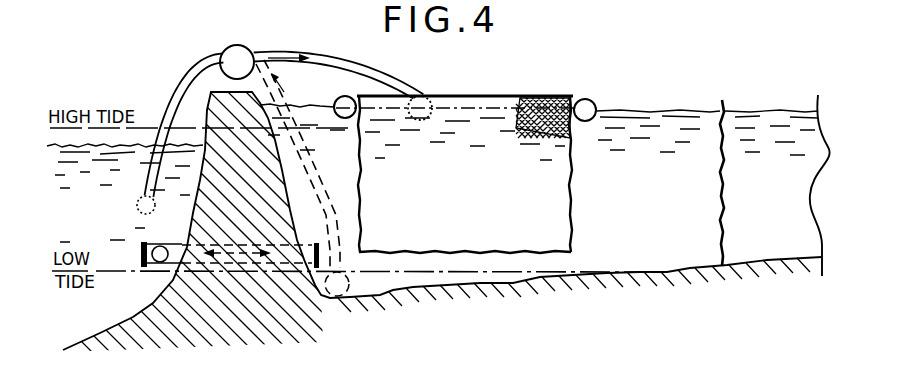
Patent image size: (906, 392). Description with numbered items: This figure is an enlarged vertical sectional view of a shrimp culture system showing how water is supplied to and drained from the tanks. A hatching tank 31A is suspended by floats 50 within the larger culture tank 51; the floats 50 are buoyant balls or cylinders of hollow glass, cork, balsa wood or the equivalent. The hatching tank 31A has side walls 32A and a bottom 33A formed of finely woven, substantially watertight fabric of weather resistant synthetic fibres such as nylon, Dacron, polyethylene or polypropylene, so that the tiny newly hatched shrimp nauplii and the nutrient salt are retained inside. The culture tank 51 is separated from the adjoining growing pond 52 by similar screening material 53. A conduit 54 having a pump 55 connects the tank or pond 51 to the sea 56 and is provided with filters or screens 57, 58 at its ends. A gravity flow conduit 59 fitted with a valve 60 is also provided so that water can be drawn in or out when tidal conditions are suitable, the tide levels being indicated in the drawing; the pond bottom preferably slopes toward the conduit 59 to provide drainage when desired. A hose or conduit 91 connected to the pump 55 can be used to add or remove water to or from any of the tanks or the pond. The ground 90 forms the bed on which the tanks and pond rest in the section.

The hatching tank 31A is at (455, 161).
The side walls 32A is at (366, 232).
The bottom 33A is at (429, 250).
The floats 50 is at (346, 96).
The culture tank 51 is at (656, 112).
The growing pond 52 is at (753, 112).
The screening material 53 is at (718, 229).
The conduit 54 is at (181, 90).
The pump 55 is at (224, 49).
The sea 56 is at (125, 193).
The filter or screen 57 is at (156, 200).
The filter or screen 58 is at (432, 96).
The gravity flow conduit 59 is at (219, 246).
The valve 60 is at (166, 245).
The ground 90 is at (528, 283).
The hose or conduit 91 is at (314, 180).